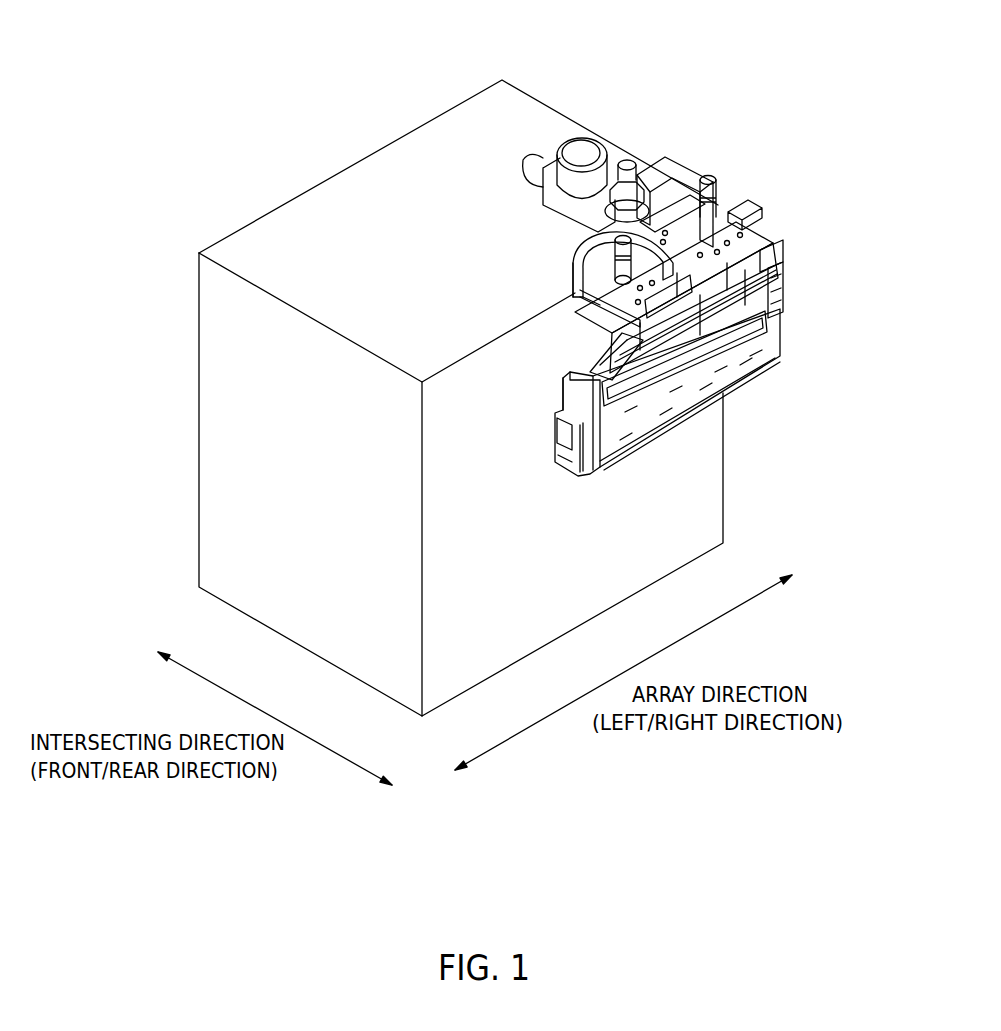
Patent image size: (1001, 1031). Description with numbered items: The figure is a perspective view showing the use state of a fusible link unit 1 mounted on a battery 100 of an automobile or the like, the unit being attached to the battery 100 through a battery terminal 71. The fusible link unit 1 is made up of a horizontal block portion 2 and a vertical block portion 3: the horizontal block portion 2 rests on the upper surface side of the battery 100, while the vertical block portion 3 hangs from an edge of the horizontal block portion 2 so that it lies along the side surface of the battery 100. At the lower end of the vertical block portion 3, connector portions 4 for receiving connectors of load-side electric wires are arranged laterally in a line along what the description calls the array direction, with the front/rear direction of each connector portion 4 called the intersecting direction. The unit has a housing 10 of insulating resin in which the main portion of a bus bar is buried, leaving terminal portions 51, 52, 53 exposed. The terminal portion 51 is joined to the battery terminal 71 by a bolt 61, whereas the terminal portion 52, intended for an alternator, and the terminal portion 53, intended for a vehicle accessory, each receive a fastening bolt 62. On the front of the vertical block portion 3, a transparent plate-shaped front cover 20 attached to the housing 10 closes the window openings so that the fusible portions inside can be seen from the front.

The battery 100 is at (510, 117).
The fusible link unit 1 is at (807, 192).
The housing 10 is at (798, 247).
The horizontal block portion 2 is at (680, 165).
The vertical block portion 3 is at (785, 293).
The connector portion 4 is at (783, 337).
The front cover 20 is at (695, 340).
The terminal portion 51 is at (660, 175).
The terminal portion 52 is at (738, 202).
The terminal portion 53 is at (607, 278).
The bolt 61 is at (630, 172).
The fastening bolt 62 is at (712, 178).
The battery terminal 71 is at (540, 188).